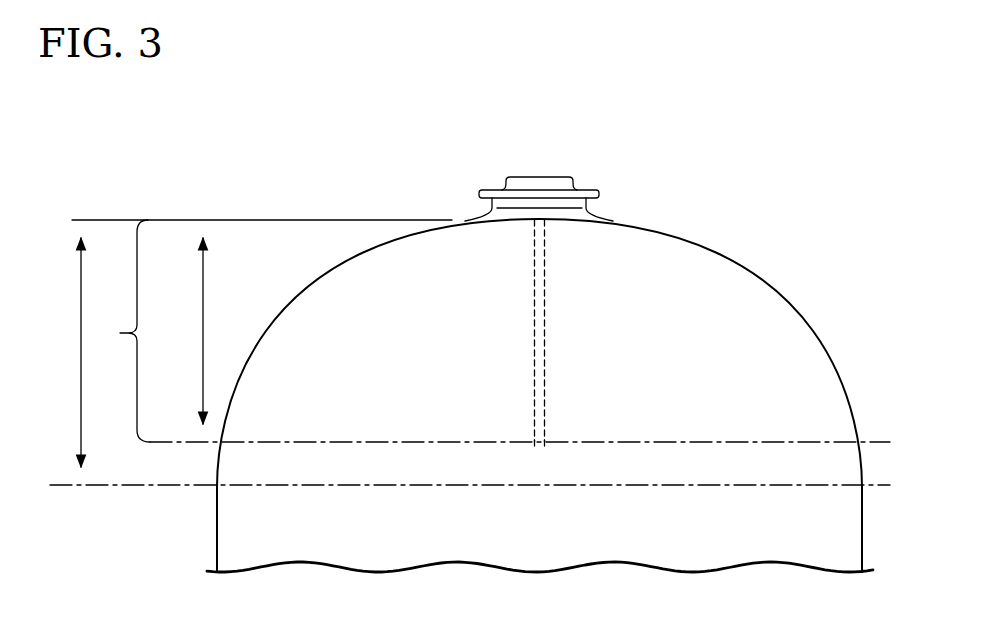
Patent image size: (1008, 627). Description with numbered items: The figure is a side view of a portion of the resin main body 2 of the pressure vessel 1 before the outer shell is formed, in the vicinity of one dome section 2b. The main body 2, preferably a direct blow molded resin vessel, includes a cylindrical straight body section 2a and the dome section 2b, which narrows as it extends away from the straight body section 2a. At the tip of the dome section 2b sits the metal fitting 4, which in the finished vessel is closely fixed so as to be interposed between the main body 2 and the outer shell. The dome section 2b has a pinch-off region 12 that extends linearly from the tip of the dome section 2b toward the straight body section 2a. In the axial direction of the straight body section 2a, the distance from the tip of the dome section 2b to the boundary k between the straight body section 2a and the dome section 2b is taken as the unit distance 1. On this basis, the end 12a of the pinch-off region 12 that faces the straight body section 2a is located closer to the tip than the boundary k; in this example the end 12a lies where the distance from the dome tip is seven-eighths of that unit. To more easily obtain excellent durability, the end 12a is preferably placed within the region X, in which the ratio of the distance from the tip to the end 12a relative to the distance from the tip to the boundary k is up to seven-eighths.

The pressure vessel 1 is at (474, 343).
The main body 2 is at (492, 365).
The straight body section 2a is at (217, 534).
The dome section 2b is at (343, 260).
The metal fitting 4 is at (541, 177).
The pinch-off region 12 is at (546, 335).
The end of pinch-off region 12a is at (539, 444).
The boundary k is at (460, 483).
The region X is at (150, 331).